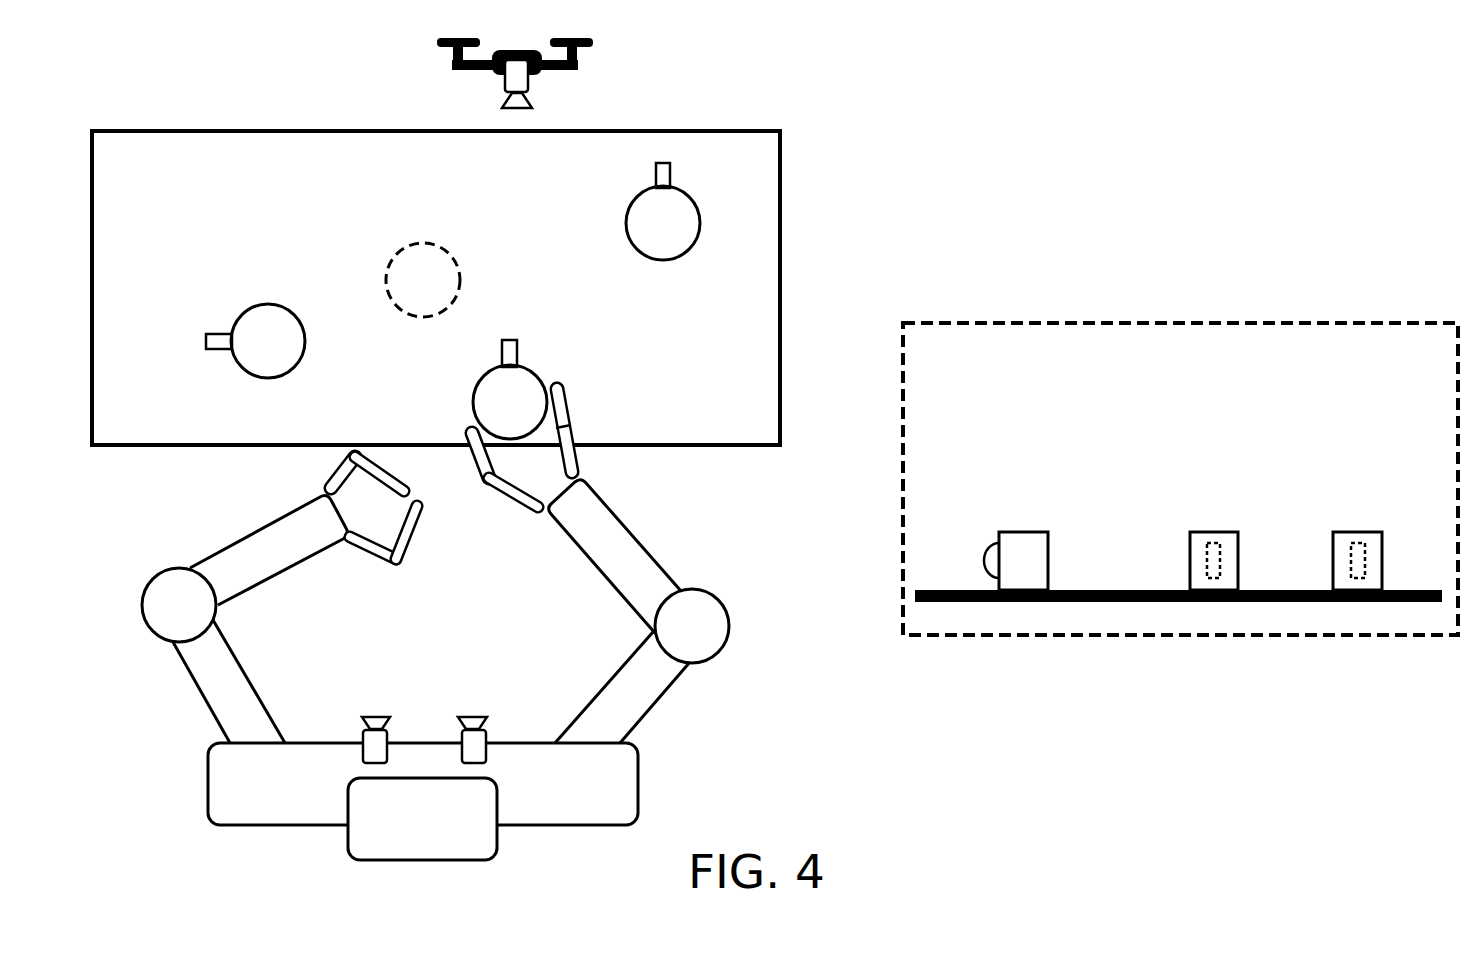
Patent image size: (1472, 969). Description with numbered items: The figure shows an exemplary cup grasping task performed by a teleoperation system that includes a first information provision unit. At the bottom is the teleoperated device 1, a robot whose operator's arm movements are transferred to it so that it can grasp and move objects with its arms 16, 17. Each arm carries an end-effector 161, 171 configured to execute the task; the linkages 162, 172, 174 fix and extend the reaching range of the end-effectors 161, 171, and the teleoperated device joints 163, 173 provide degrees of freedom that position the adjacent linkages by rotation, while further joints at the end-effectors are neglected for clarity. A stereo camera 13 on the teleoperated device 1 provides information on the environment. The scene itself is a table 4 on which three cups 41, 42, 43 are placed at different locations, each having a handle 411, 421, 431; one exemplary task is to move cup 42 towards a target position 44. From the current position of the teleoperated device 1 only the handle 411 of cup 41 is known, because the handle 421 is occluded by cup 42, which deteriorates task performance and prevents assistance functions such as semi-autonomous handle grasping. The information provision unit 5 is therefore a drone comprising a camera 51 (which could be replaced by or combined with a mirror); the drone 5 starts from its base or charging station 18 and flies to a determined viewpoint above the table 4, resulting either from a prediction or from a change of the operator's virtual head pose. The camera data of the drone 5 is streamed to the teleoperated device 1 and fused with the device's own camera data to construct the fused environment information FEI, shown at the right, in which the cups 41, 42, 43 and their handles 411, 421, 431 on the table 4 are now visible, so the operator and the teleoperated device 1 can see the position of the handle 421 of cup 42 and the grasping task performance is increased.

The teleoperated device 1 is at (641, 774).
The table 4 is at (128, 128).
The information provision unit 5 is at (549, 81).
The camera 51 is at (512, 108).
The stereo camera 13 is at (372, 714).
The arm 16 is at (606, 554).
The end-effector 161 is at (582, 456).
The linkage 162 is at (590, 534).
The teleoperated device joint 163 is at (694, 631).
The arm 17 is at (269, 566).
The end-effector 171 is at (332, 472).
The linkage 172 is at (300, 547).
The teleoperated device joint 173 is at (207, 604).
The linkage 174 is at (226, 694).
The base or charging station 18 is at (473, 836).
The cup 41 is at (604, 413).
The handle 411 is at (212, 332).
The cup 42 is at (849, 433).
The handle 421 is at (512, 336).
The cup 43 is at (962, 369).
The handle 431 is at (652, 172).
The target position 44 is at (420, 238).
The fused environment information FEI is at (1000, 318).